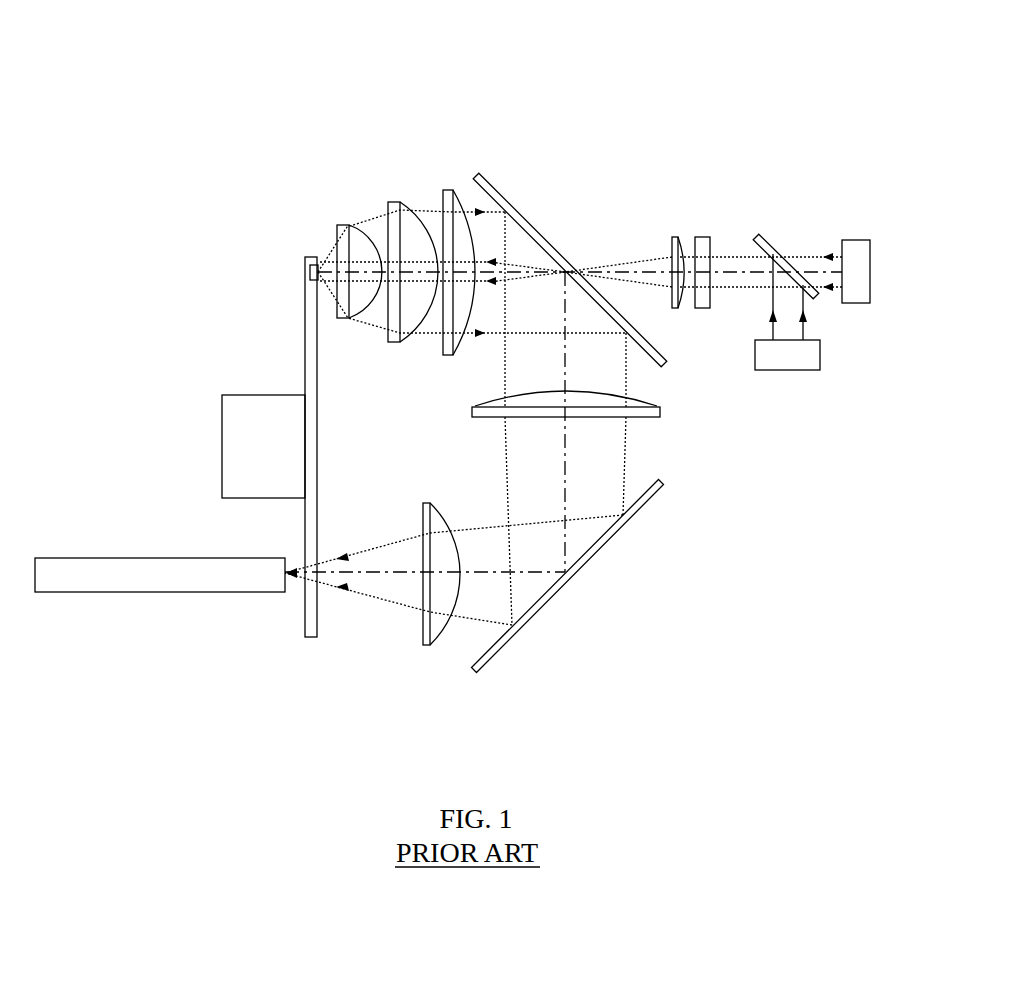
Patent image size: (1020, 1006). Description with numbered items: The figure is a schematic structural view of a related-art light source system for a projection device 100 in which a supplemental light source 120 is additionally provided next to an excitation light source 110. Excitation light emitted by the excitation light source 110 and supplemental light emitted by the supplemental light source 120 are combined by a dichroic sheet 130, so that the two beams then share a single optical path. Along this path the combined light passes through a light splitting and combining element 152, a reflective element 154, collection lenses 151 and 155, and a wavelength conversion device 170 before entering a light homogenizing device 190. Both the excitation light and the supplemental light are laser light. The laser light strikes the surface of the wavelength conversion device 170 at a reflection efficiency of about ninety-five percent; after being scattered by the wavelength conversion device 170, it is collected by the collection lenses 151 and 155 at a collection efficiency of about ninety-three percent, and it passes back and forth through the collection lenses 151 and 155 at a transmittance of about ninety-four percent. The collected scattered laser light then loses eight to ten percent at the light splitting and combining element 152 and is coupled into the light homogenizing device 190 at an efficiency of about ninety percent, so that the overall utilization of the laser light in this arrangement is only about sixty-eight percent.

The projection device 100 is at (470, 64).
The excitation light source 110 is at (851, 248).
The supplemental light source 120 is at (790, 360).
The dichroic sheet 130 is at (765, 237).
The collection lens 151 is at (389, 188).
The light splitting and combining element 152 is at (489, 180).
The reflective element 154 is at (640, 503).
The collection lens 155 is at (423, 500).
The wavelength conversion device 170 is at (310, 333).
The light homogenizing device 190 is at (163, 578).